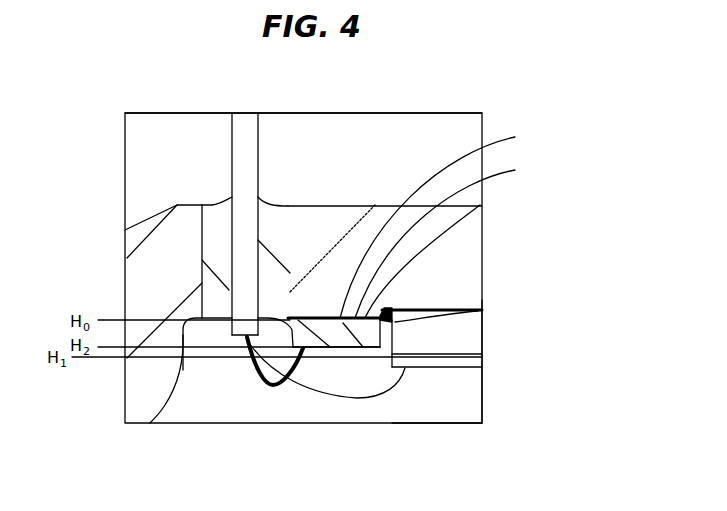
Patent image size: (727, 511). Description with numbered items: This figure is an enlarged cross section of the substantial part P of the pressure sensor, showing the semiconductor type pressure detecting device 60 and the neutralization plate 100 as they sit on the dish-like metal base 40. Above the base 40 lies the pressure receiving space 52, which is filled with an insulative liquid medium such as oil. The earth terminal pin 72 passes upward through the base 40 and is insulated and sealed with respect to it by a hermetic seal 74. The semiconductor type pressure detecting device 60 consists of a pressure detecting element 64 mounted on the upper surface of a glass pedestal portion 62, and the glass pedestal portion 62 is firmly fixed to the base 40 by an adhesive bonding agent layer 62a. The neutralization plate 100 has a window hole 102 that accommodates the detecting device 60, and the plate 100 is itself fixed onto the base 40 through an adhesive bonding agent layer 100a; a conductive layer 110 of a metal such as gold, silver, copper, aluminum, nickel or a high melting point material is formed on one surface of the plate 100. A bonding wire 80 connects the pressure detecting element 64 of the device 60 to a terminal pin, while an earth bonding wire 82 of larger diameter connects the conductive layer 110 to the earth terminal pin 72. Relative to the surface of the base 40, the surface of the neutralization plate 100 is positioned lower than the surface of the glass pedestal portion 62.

The piezoelectric element region P is at (335, 125).
The base 40 is at (472, 222).
The earth terminal pin 72 is at (243, 150).
The hermetic seal 74 is at (213, 237).
The pressure receiving space 52 is at (283, 410).
The neutralization plate 100 is at (419, 254).
The adhesive bonding agent layer 100a is at (451, 221).
The window hole 102 is at (440, 310).
The glass pedestal portion 62 is at (472, 326).
The adhesive bonding agent layer 62a is at (478, 311).
The pressure detecting element 64 is at (438, 364).
The semiconductor type pressure detecting device 60 is at (490, 347).
The bonding wire 80 is at (358, 400).
The earth bonding wire 82 is at (250, 372).
The conductive layer 110 is at (340, 357).